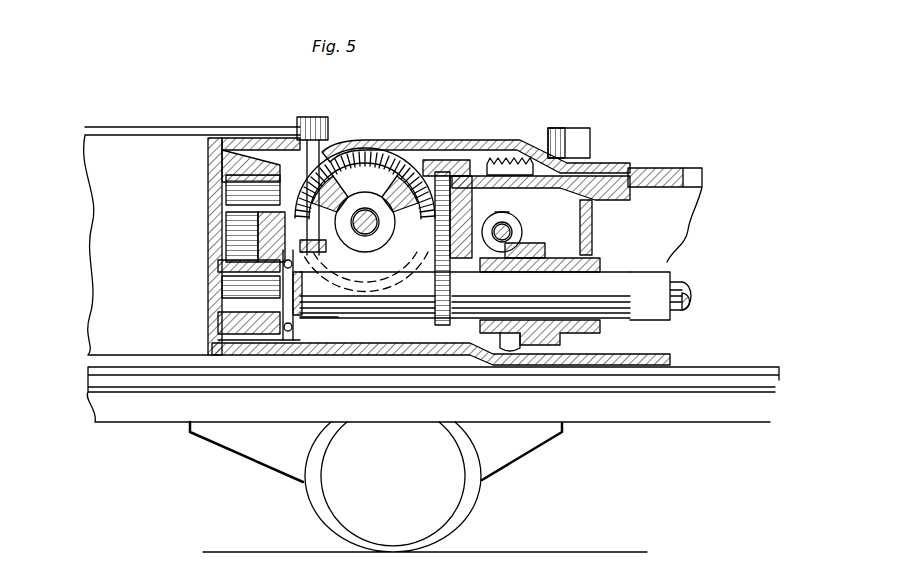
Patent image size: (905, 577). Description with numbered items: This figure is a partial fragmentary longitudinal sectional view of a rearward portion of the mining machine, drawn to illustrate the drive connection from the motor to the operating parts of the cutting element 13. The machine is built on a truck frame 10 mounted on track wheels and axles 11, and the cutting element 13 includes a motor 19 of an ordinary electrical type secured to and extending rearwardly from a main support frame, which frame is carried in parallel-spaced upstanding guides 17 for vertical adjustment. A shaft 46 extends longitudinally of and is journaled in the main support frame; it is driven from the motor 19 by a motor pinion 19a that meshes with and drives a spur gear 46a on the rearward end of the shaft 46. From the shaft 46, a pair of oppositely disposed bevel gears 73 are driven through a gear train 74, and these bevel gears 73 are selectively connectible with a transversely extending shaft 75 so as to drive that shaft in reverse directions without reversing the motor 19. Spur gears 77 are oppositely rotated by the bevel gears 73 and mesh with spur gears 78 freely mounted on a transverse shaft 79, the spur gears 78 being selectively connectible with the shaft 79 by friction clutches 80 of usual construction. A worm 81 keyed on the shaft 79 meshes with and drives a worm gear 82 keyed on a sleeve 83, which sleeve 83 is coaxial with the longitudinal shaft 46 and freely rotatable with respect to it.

The motor 19 is at (100, 218).
The motor pinion 19a is at (210, 202).
The truck frame 10 is at (138, 423).
The track wheels and axles 11 is at (313, 517).
The shaft 46 is at (338, 317).
The spur gear 46a is at (237, 338).
The bevel gears 73 is at (397, 143).
The gear train 74 is at (457, 170).
The transverse shaft 75 is at (380, 222).
The spur gears 77 is at (410, 162).
The spur gears 78 is at (498, 162).
The transverse shaft 79 is at (514, 232).
The friction clutches 80 is at (416, 356).
The worm 81 is at (506, 214).
The worm gear 82 is at (505, 343).
The sleeve 83 is at (617, 323).
The upstanding guides 17 is at (590, 150).
The cutting element 13 is at (658, 172).